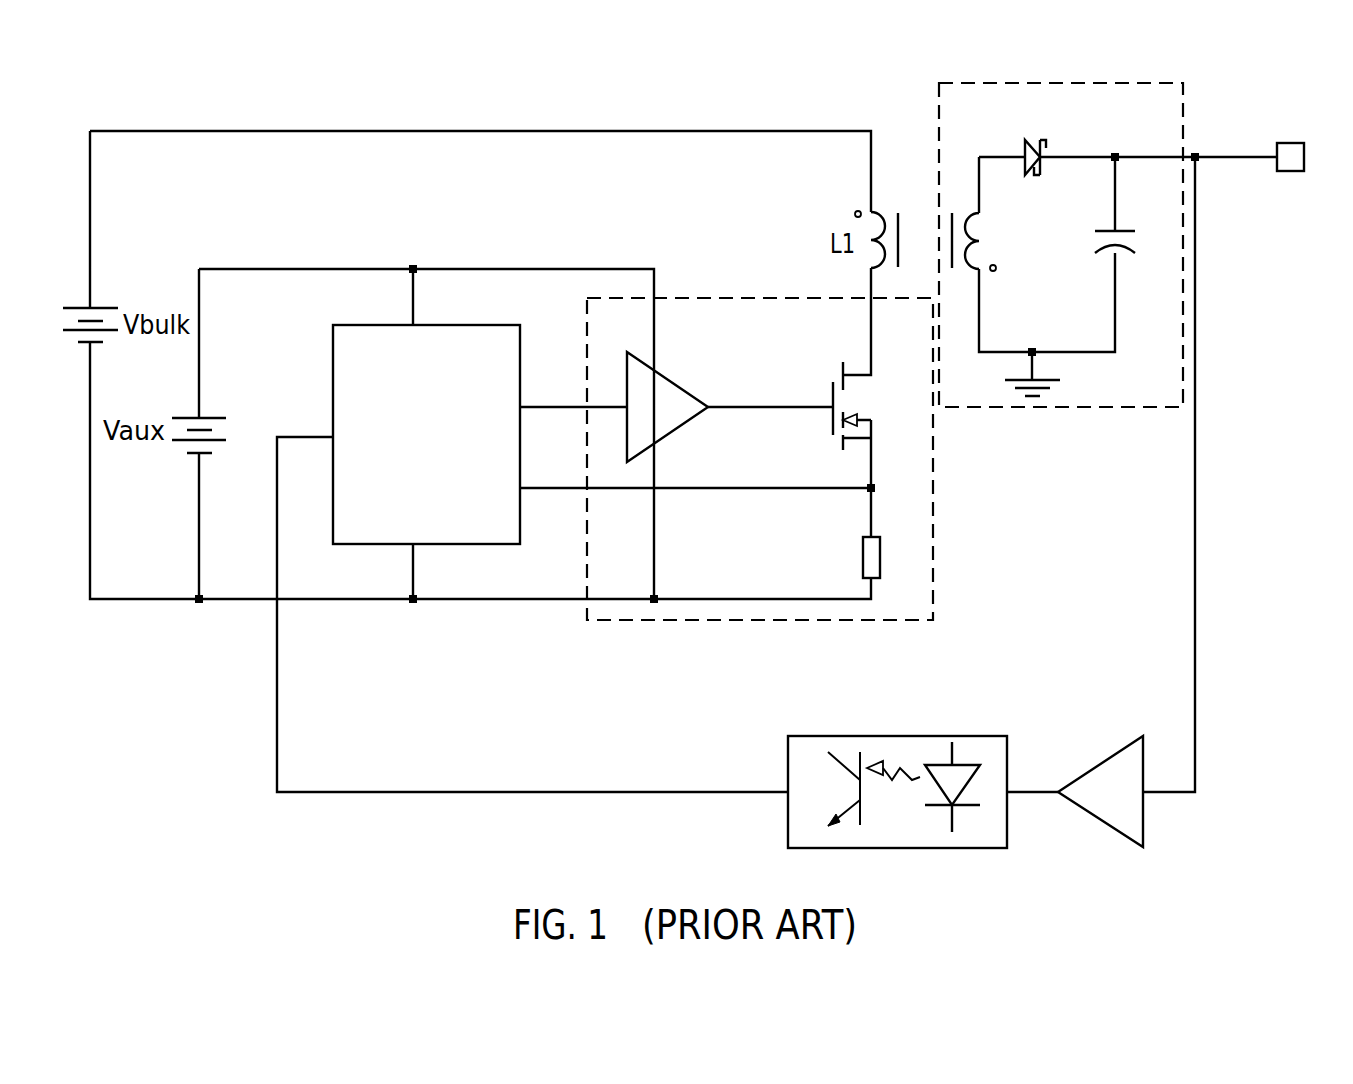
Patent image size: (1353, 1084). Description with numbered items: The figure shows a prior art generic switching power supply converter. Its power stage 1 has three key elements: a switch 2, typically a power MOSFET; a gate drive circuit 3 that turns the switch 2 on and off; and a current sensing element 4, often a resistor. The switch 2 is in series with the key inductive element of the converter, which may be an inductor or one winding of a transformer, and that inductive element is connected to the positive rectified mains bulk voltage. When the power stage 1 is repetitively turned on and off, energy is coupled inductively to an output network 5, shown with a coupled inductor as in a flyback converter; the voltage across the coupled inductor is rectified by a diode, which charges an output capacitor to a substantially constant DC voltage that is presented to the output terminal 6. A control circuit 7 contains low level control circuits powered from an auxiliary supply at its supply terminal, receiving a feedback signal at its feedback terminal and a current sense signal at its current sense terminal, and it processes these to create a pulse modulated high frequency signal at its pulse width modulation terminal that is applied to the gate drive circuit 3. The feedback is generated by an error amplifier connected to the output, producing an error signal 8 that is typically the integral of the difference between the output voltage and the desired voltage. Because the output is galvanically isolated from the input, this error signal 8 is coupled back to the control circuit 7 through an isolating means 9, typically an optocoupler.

The power stage 1 is at (776, 298).
The switch 2 is at (875, 434).
The gate drive circuit 3 is at (672, 380).
The current sensing element 4 is at (883, 560).
The output network 5 is at (983, 83).
The output terminal 6 is at (1290, 143).
The control circuit 7 is at (343, 323).
The error signal 8 is at (1043, 790).
The isolating means 9 is at (876, 730).